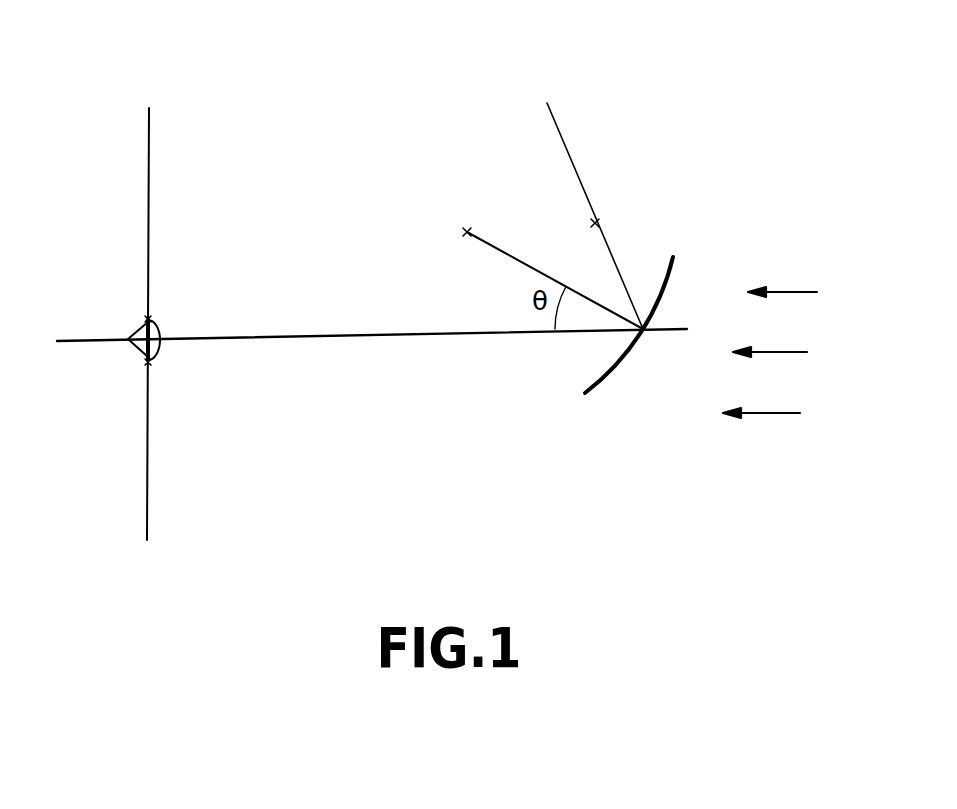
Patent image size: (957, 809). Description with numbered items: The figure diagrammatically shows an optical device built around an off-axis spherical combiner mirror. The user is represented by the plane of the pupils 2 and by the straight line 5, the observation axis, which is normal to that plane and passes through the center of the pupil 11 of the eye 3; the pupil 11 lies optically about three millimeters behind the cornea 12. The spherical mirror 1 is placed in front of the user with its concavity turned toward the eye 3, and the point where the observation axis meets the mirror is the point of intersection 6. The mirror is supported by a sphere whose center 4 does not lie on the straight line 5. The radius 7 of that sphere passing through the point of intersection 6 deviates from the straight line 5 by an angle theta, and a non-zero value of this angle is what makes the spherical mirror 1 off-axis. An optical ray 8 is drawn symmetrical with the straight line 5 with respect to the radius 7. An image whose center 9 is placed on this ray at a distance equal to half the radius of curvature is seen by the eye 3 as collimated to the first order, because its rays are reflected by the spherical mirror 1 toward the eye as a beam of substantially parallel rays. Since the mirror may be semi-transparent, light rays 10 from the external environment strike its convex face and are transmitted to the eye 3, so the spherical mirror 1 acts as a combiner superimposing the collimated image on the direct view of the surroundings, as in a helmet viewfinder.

The spherical mirror 1 is at (598, 387).
The plane of the pupils 2 is at (148, 505).
The eye 3 is at (143, 352).
The center of the supporting sphere 4 is at (465, 231).
The observation axis 5 is at (333, 338).
The point of intersection 6 is at (650, 323).
The radius of the sphere 7 is at (497, 252).
The optical ray 8 is at (548, 107).
The image center 9 is at (600, 222).
The light rays 10 is at (785, 352).
The pupil 11 is at (146, 325).
The cornea 12 is at (160, 330).